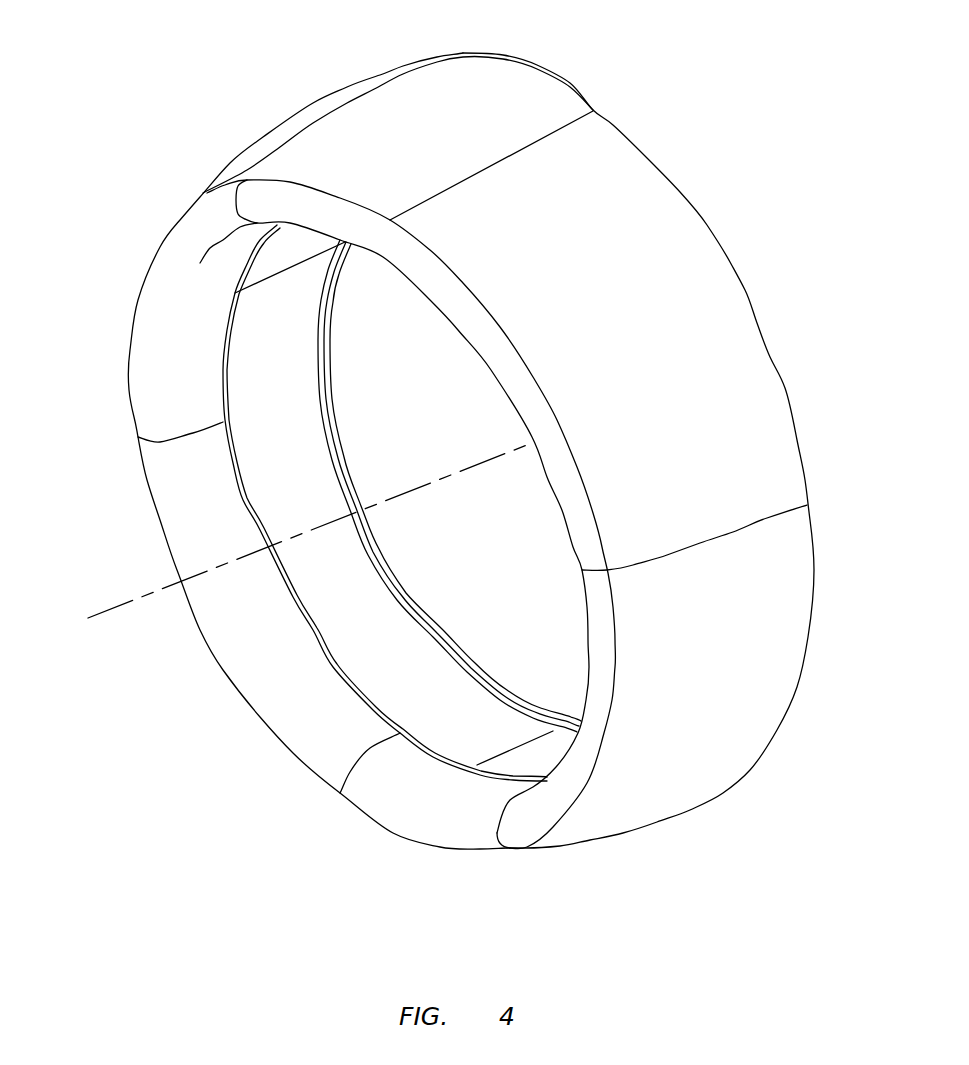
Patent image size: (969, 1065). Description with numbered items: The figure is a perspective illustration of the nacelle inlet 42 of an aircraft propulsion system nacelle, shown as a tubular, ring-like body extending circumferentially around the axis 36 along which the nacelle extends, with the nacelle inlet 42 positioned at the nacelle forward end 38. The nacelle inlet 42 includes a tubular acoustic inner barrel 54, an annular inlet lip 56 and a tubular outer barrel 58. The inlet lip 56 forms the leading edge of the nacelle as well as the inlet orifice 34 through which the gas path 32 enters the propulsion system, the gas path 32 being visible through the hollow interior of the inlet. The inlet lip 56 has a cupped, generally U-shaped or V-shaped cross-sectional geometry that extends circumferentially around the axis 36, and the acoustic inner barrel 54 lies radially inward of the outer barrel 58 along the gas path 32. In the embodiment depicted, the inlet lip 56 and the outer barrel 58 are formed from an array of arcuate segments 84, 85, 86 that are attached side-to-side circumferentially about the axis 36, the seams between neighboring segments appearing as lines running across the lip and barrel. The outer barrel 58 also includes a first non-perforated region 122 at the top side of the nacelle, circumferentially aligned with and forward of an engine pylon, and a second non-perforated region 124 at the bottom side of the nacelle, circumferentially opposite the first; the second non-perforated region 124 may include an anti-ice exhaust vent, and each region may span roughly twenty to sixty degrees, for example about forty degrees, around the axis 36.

The nacelle inlet 42 is at (166, 92).
The gas path 32 is at (478, 571).
The inlet orifice 34 is at (295, 700).
The axis 36 is at (121, 606).
The nacelle forward end 38 is at (303, 742).
The tubular acoustic inner barrel 54 is at (471, 703).
The annular inlet lip 56 is at (221, 672).
The tubular outer barrel 58 is at (705, 320).
The arcuate segment 84 is at (130, 368).
The arcuate segment 85 is at (333, 127).
The arcuate segment 86 is at (435, 830).
The first non-perforated region 122 is at (544, 102).
The second non-perforated region 124 is at (480, 858).